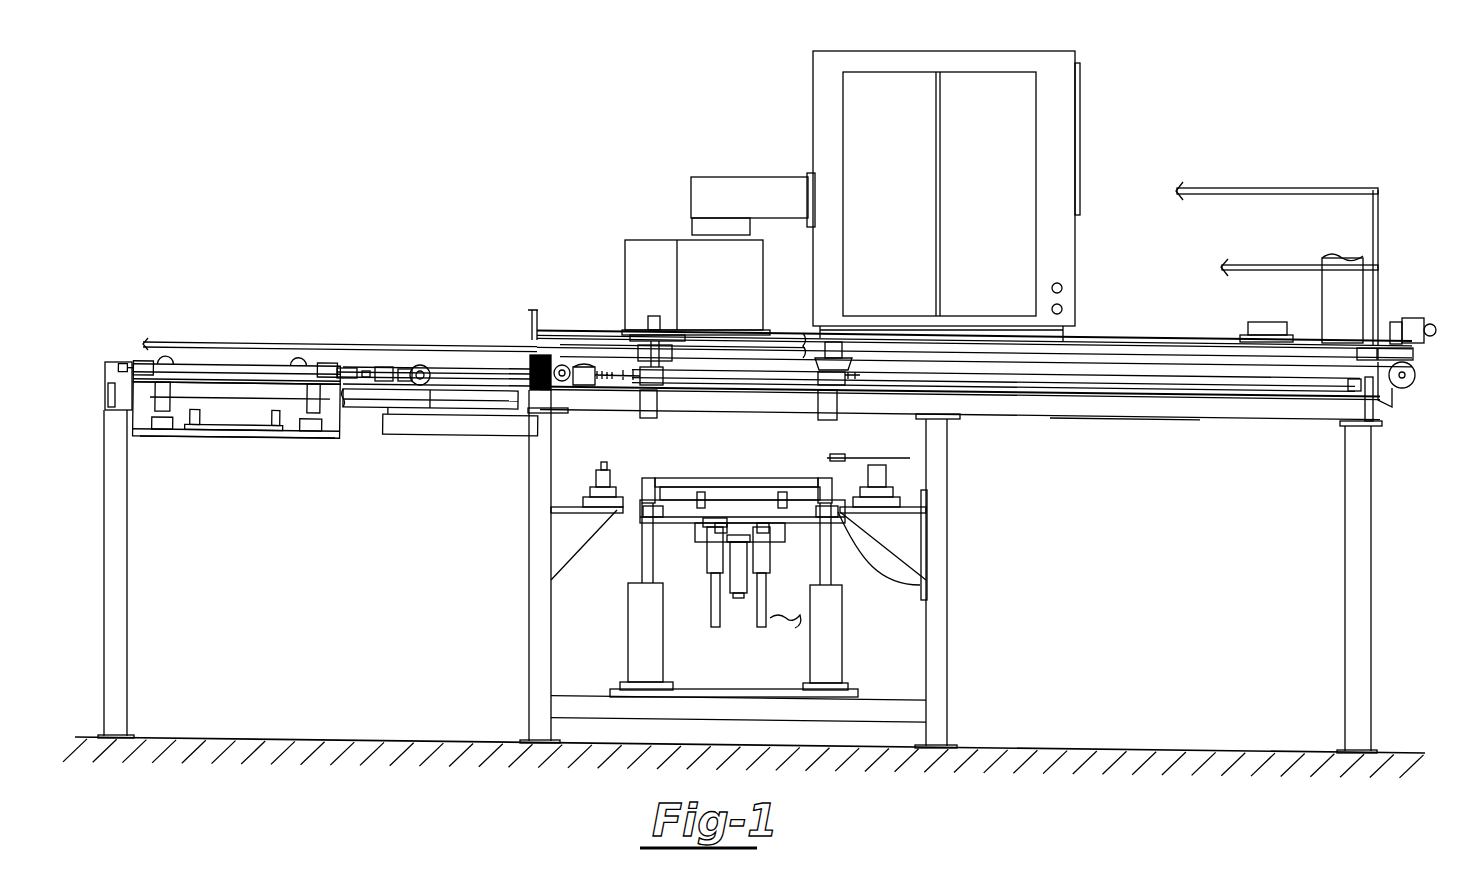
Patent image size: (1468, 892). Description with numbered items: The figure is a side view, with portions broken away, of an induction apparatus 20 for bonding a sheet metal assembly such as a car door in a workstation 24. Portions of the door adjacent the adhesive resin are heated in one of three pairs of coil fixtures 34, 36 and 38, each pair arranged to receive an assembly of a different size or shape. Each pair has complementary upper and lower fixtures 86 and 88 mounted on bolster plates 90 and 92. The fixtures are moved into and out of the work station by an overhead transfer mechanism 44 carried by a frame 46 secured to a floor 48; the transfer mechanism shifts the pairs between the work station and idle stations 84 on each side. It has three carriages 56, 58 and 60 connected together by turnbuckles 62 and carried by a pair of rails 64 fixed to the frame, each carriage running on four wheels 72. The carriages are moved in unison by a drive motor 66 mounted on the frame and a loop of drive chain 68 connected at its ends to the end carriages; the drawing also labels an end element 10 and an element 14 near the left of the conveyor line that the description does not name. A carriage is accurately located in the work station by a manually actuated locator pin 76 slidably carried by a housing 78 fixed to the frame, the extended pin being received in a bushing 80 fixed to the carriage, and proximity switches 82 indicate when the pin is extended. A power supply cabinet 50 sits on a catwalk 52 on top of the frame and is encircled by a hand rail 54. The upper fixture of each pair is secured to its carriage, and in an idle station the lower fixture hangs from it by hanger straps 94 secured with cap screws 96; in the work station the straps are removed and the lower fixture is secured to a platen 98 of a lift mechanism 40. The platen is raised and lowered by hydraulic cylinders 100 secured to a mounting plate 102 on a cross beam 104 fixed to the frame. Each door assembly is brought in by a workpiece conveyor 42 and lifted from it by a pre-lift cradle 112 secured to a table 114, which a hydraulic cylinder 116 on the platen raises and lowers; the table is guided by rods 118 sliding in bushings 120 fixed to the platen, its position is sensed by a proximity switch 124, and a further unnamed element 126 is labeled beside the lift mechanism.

The pulley 10 is at (1410, 390).
The conveyor section 14 is at (377, 403).
The induction apparatus 20 is at (668, 153).
The workstation 24 is at (652, 466).
The coil fixtures 34 is at (262, 437).
The coil fixtures 36 is at (433, 440).
The coil fixtures 38 is at (877, 400).
The lift mechanism 40 is at (640, 545).
The workpiece conveyor 42 is at (565, 488).
The overhead transfer mechanism 44 is at (262, 365).
The frame 46 is at (105, 540).
The floor 48 is at (330, 738).
The power supply cabinet 50 is at (810, 103).
The catwalk 52 is at (1130, 342).
The hand rail 54 is at (1380, 222).
The carriage 56 is at (222, 350).
The carriage 58 is at (456, 378).
The carriage 60 is at (868, 358).
The turnbuckles 62 is at (365, 370).
The rails 64 is at (480, 392).
The drive motor 66 is at (1418, 318).
The drive chain 68 is at (1180, 385).
The wheels 72 is at (420, 365).
The locator pin 76 is at (662, 362).
The housing 78 is at (666, 360).
The bushing 80 is at (670, 372).
The proximity switches 82 is at (612, 362).
The idle stations 84 is at (268, 434).
The upper fixture 86 is at (738, 418).
The lower fixture 88 is at (735, 480).
The bolster plate 90 is at (860, 395).
The bolster plate 92 is at (830, 505).
The hanger straps 94 is at (383, 370).
The cap screws 96 is at (605, 440).
The platen 98 is at (845, 540).
The hydraulic cylinders 100 is at (662, 660).
The mounting plate 102 is at (732, 695).
The cross beam 104 is at (785, 715).
The pre-lift cradle 112 is at (790, 495).
The table 114 is at (703, 500).
The hydraulic cylinder 116 is at (738, 592).
The rods 118 is at (710, 615).
The bushings 120 is at (712, 557).
The proximity switch 124 is at (778, 620).
The fixture 126 is at (855, 500).